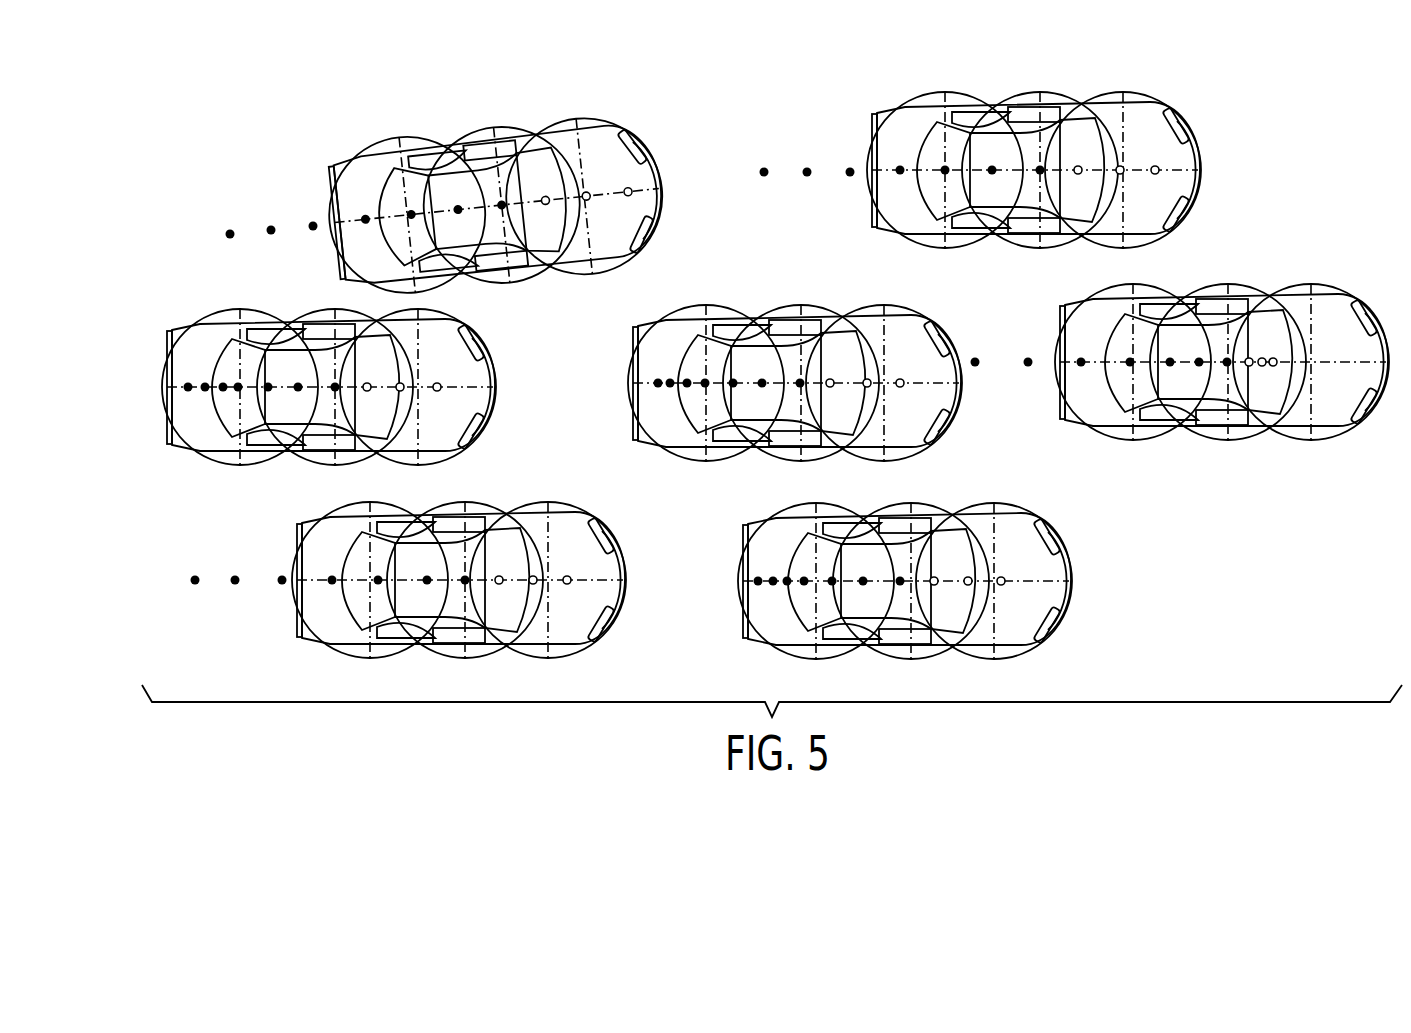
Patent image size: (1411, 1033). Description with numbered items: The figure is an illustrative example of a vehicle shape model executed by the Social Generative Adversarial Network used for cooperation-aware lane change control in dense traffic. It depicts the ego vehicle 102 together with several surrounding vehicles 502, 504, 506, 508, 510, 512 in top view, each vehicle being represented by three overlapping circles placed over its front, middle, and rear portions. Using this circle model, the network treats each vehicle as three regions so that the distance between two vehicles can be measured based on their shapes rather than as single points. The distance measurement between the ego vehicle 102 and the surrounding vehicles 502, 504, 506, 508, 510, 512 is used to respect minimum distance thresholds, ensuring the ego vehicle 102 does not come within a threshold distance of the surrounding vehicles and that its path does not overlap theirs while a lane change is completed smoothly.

The ego vehicle 102 is at (801, 305).
The surrounding vehicle 502 is at (481, 135).
The surrounding vehicle 504 is at (1053, 100).
The surrounding vehicle 506 is at (177, 332).
The surrounding vehicle 508 is at (1240, 292).
The surrounding vehicle 510 is at (480, 510).
The surrounding vehicle 512 is at (925, 510).